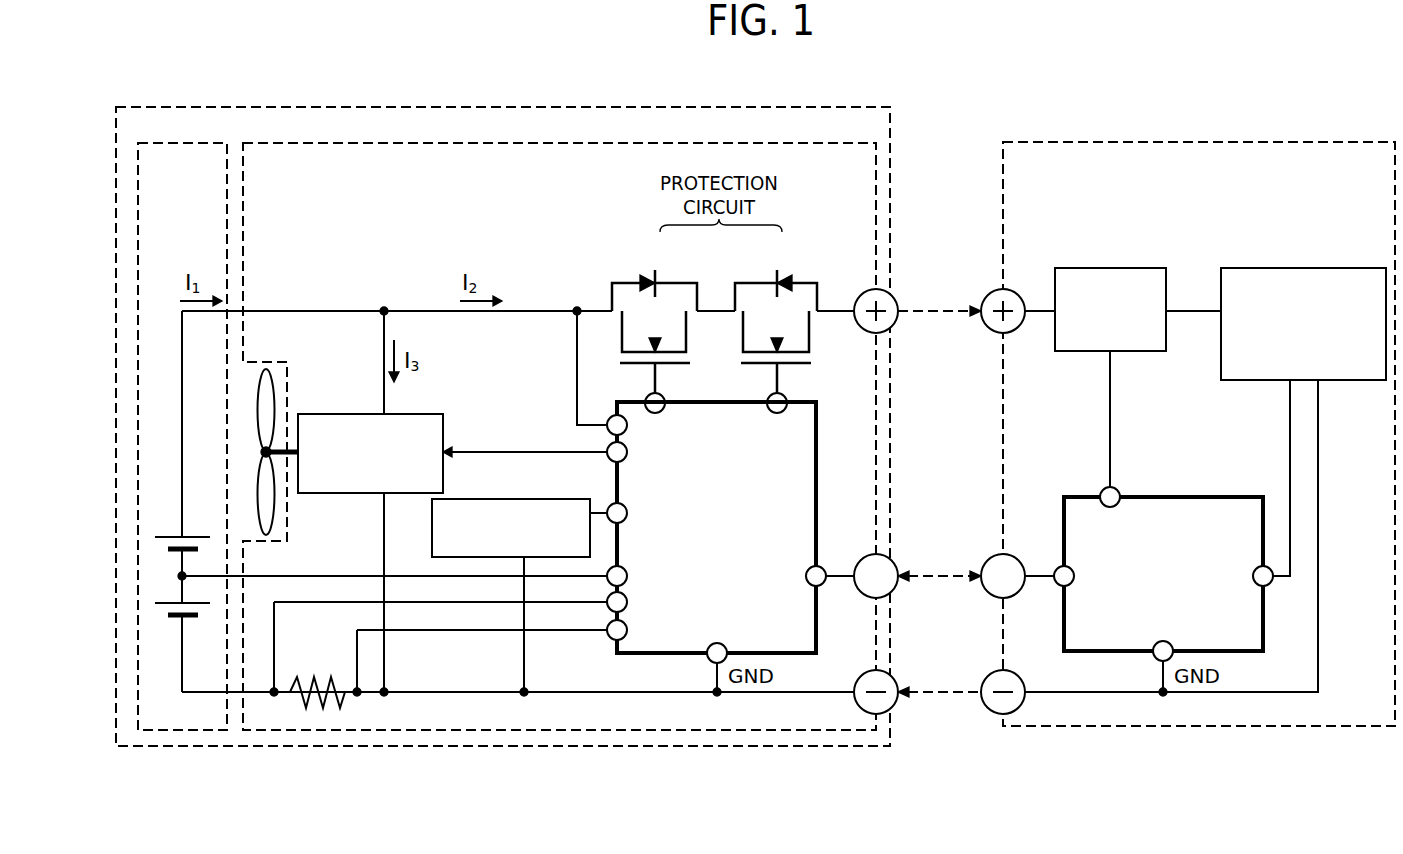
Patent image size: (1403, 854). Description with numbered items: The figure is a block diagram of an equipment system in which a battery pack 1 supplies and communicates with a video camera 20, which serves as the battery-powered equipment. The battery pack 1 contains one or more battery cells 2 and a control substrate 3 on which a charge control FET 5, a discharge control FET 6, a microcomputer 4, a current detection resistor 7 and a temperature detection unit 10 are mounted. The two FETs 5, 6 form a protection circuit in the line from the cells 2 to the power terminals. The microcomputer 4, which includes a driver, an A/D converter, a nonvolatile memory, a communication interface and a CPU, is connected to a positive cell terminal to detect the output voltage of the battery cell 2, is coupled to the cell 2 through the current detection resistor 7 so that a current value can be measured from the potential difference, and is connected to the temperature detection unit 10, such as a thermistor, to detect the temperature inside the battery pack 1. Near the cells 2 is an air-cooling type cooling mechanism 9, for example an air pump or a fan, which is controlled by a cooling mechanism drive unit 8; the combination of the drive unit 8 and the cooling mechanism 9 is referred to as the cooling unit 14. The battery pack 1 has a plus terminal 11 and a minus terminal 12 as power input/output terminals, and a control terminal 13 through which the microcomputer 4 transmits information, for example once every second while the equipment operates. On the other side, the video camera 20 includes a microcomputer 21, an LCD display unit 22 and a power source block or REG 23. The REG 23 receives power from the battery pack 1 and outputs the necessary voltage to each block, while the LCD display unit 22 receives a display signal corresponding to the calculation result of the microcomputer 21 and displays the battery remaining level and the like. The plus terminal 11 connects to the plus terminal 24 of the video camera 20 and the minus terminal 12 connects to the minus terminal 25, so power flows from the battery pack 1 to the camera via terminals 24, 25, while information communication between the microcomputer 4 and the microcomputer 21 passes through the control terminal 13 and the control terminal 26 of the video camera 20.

The battery pack 1 is at (535, 107).
The battery cell 2 is at (174, 141).
The control substrate 3 is at (345, 141).
The microcomputer 4 is at (818, 440).
The charge control FET 5 is at (674, 290).
The discharge control FET 6 is at (766, 290).
The current detection resistor 7 is at (330, 700).
The cooling mechanism drive unit 8 is at (362, 414).
The cooling mechanism 9 is at (275, 385).
The temperature detection unit 10 is at (533, 499).
The plus terminal 11 is at (862, 290).
The minus terminal 12 is at (862, 671).
The control terminal 13 is at (862, 555).
The cooling unit 14 is at (351, 429).
The video camera 20 is at (1139, 141).
The microcomputer 21 is at (1200, 495).
The LCD display unit 22 is at (1342, 267).
The REG 23 is at (1140, 267).
The plus terminal 24 is at (989, 290).
The minus terminal 25 is at (989, 671).
The control terminal 26 is at (989, 555).